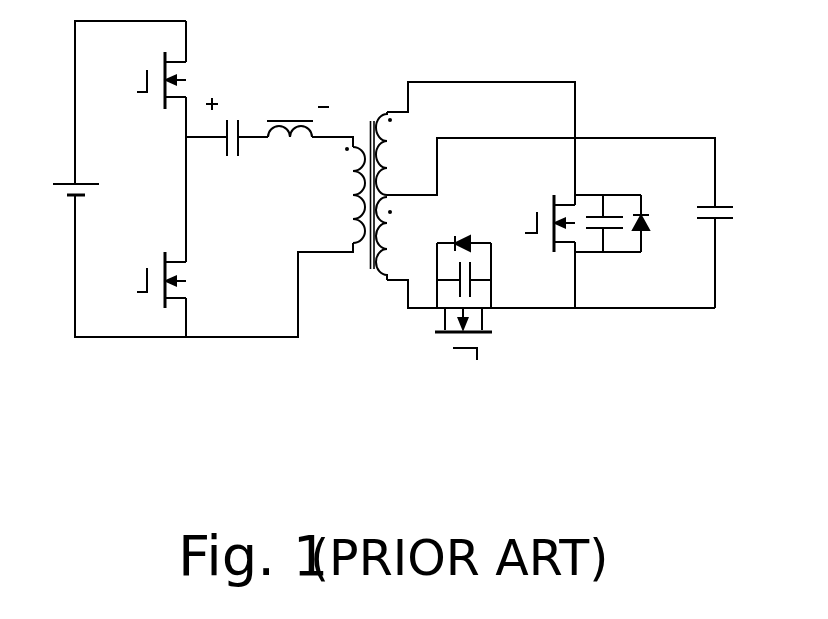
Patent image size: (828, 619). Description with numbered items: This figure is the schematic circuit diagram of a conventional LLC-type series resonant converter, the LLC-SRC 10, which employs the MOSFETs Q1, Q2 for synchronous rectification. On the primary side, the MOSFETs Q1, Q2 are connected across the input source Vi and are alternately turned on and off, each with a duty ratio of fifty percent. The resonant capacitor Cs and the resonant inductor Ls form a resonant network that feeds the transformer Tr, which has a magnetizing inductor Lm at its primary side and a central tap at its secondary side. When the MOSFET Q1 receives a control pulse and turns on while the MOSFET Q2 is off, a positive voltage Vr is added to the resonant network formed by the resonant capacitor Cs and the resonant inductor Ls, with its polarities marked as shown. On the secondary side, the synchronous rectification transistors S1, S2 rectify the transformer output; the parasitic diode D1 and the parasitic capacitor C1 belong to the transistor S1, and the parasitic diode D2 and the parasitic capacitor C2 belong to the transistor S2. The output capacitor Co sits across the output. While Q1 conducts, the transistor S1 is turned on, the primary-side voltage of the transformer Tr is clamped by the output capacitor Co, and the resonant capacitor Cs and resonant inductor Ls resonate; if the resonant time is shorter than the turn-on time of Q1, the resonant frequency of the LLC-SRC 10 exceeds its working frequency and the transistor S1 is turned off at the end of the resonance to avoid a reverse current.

The LLC-SRC 10 is at (683, 422).
The MOSFET Q1 is at (149, 80).
The MOSFET Q2 is at (161, 266).
The input voltage source Vi is at (65, 185).
The resonant capacitor Cs is at (231, 149).
The resonant inductor Ls is at (290, 152).
The positive voltage Vr is at (267, 106).
The transformer Tr is at (355, 175).
The magnetizing inductor Lm is at (341, 195).
The parasitic diode D1 is at (464, 231).
The parasitic capacitor C1 is at (481, 275).
The synchronous rectification transistor S1 is at (473, 337).
The synchronous rectification transistor S2 is at (550, 238).
The parasitic capacitor C2 is at (608, 235).
The parasitic diode D2 is at (656, 223).
The output capacitor Co is at (730, 213).